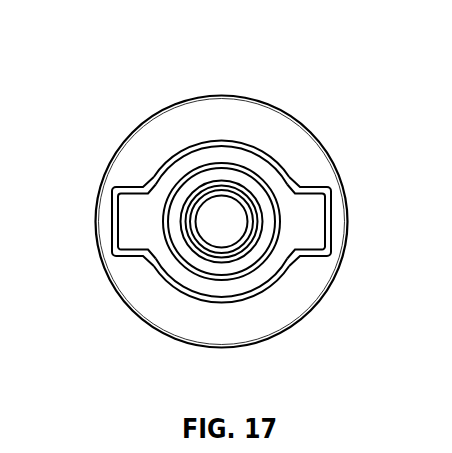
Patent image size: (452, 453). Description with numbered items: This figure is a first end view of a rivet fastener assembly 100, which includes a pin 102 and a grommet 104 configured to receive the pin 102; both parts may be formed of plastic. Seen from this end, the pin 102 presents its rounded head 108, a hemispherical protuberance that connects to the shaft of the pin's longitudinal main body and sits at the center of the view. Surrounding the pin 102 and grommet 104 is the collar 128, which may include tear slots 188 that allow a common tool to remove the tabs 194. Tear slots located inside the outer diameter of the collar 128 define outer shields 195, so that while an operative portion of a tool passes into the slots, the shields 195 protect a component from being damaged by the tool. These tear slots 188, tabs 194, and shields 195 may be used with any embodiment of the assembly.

The rivet fastener assembly 100 is at (210, 43).
The pin 102 is at (218, 236).
The grommet 104 is at (298, 141).
The rounded head 108 is at (233, 213).
The collar 128 is at (177, 110).
The tear slots 188 is at (135, 187).
The tabs 194 is at (97, 232).
The outer shields 195 is at (100, 215).